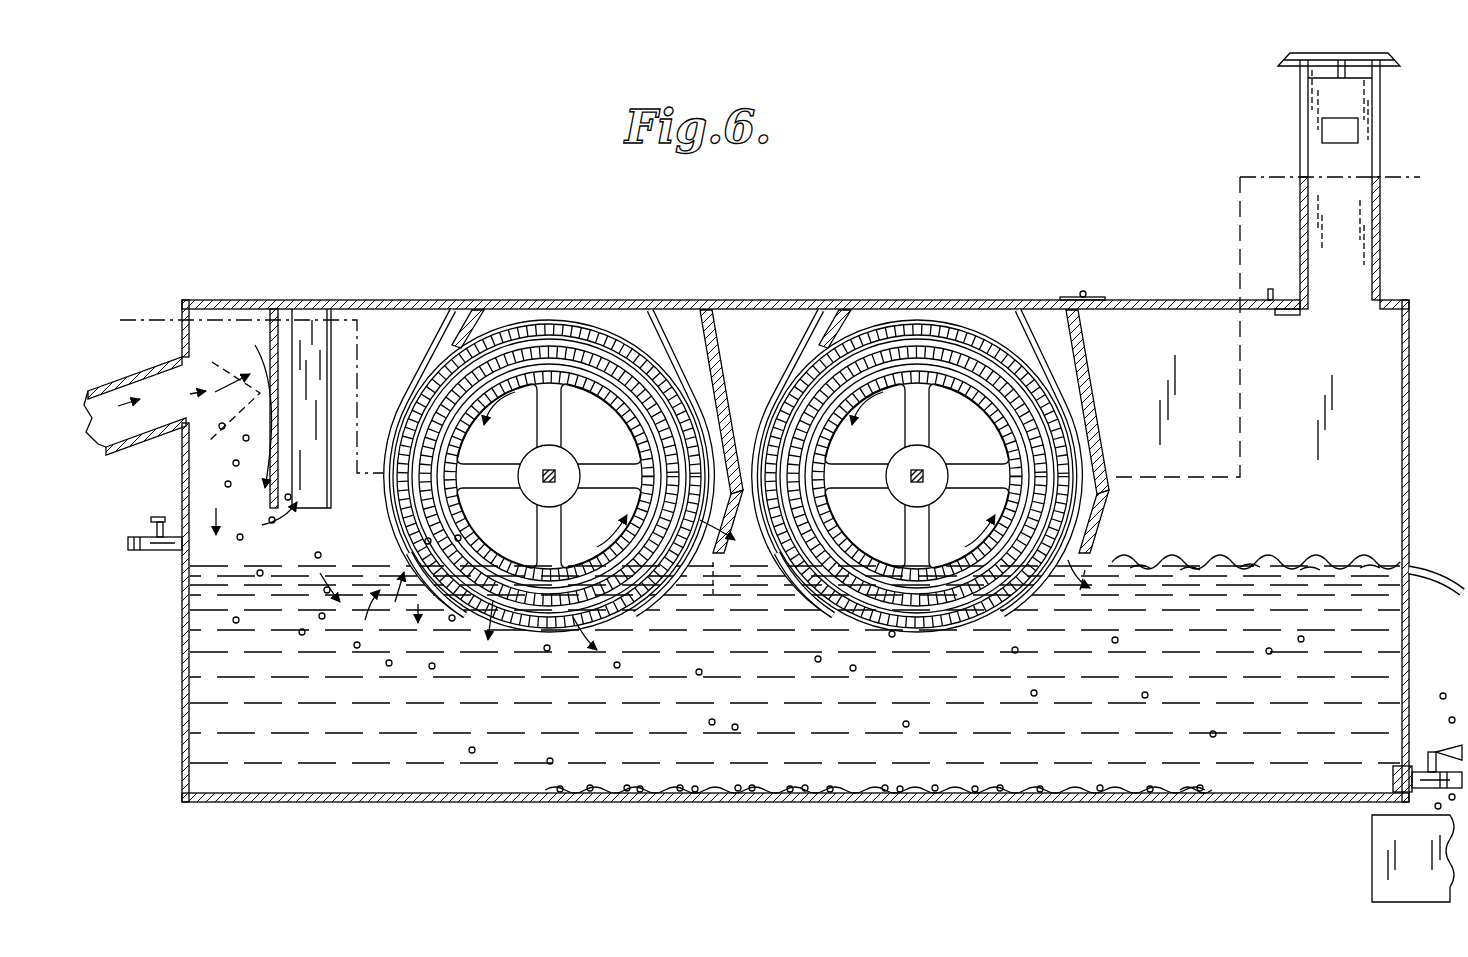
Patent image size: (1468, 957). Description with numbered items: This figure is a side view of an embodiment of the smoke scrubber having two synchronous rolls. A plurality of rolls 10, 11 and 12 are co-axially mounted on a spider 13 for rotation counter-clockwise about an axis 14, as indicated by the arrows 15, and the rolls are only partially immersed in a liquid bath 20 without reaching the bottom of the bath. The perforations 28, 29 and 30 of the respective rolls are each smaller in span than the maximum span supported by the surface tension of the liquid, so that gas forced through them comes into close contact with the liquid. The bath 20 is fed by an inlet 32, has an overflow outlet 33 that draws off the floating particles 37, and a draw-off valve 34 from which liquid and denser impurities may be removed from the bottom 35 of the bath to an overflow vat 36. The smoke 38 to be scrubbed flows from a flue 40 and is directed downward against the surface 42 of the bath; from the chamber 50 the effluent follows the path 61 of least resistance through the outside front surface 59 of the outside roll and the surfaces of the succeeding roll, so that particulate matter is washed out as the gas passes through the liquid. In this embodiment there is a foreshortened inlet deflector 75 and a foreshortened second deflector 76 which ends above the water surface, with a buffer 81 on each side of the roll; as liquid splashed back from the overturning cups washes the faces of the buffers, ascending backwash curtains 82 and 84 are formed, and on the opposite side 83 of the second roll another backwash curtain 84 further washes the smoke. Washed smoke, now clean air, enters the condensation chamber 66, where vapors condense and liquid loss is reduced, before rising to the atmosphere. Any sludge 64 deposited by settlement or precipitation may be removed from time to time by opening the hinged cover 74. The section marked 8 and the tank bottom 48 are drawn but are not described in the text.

The section line 8- 8 is at (133, 316).
The roll 10 is at (622, 398).
The roll 11 is at (660, 432).
The roll 12 is at (675, 398).
The spider 13 is at (563, 433).
The axis 14 is at (545, 472).
The arrows 15 is at (739, 469).
The liquid bath 20 is at (962, 732).
The perforations 28 is at (470, 526).
The perforations 29 is at (607, 610).
The perforations 30 is at (523, 613).
The inlet 32 is at (168, 550).
The overflow outlet 33 is at (1414, 573).
The draw-off valve 34 is at (1420, 768).
The bottom 35 is at (1205, 776).
The overflow vat 36 is at (1402, 889).
The floating particles 37 is at (1343, 548).
The smoke 38 is at (157, 407).
The flue 40 is at (140, 388).
The surface 42 is at (280, 568).
The tank bottom 48 is at (553, 802).
The chamber 50 is at (215, 351).
The outside front surface 59 is at (630, 346).
The path 61 is at (426, 383).
The sludge 64 is at (1030, 792).
The condensation chamber 66 is at (1258, 469).
The cover 74 is at (1400, 60).
The foreshortened inlet deflector 75 is at (266, 340).
The foreshortened second deflector 76 is at (340, 363).
The buffer 81 is at (420, 348).
The backwash curtain 82 is at (402, 548).
The opposite side 83 is at (1000, 353).
The backwash curtain 84 is at (1112, 517).